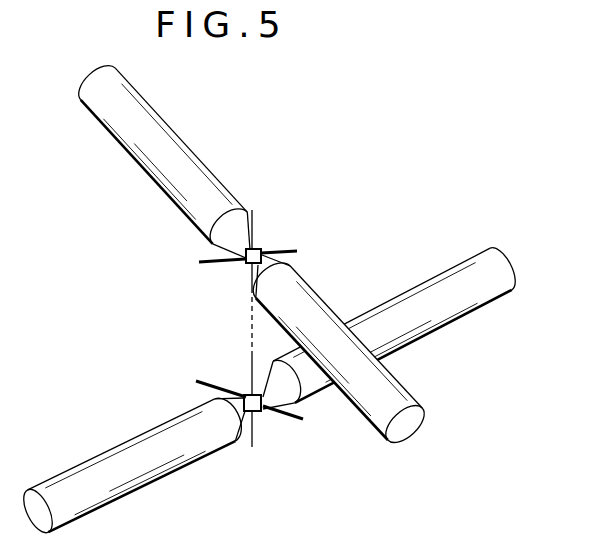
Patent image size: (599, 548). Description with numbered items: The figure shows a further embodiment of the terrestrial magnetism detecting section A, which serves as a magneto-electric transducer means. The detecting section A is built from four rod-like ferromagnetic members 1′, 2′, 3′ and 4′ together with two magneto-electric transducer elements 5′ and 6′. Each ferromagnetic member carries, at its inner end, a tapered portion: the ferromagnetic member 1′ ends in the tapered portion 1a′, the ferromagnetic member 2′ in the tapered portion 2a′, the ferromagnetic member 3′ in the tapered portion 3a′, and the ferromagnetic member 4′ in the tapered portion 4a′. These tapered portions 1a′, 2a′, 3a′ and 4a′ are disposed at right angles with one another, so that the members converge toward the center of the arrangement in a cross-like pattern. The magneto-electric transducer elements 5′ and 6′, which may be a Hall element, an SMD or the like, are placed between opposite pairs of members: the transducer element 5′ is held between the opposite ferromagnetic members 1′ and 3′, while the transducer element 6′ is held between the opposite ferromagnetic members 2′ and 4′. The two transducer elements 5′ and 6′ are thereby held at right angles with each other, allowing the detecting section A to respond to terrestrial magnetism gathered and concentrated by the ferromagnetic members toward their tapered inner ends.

The ferromagnetic member 1′ is at (168, 145).
The tapered portion 1a′ is at (236, 247).
The ferromagnetic member 2′ is at (430, 292).
The tapered portion 2a′ is at (268, 405).
The ferromagnetic member 3′ is at (392, 389).
The tapered portion 3a′ is at (258, 258).
The ferromagnetic member 4′ is at (125, 473).
The tapered portion 4a′ is at (243, 398).
The magneto-electric transducer element 5′ is at (245, 266).
The magneto-electric transducer element 6′ is at (256, 413).
The terrestrial magnetism detecting section A is at (268, 252).